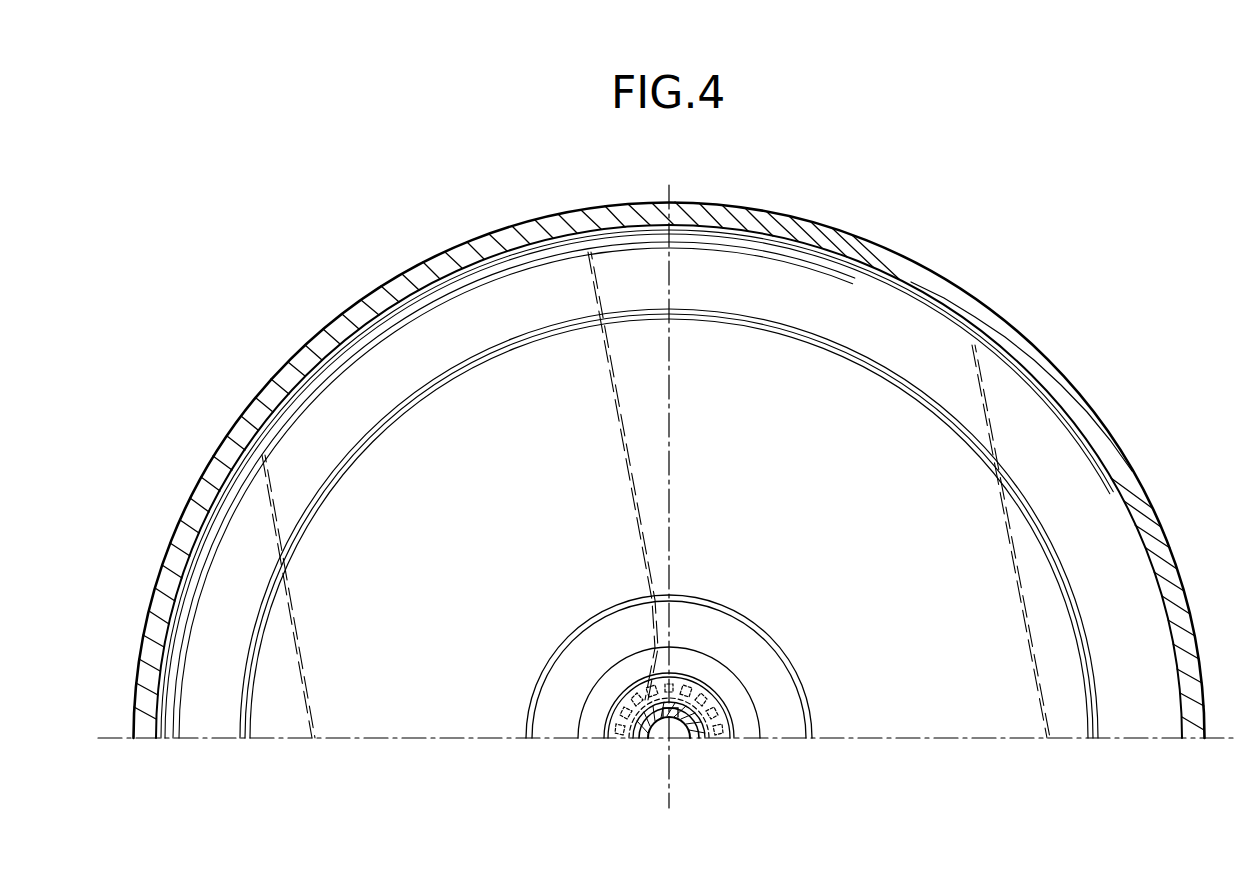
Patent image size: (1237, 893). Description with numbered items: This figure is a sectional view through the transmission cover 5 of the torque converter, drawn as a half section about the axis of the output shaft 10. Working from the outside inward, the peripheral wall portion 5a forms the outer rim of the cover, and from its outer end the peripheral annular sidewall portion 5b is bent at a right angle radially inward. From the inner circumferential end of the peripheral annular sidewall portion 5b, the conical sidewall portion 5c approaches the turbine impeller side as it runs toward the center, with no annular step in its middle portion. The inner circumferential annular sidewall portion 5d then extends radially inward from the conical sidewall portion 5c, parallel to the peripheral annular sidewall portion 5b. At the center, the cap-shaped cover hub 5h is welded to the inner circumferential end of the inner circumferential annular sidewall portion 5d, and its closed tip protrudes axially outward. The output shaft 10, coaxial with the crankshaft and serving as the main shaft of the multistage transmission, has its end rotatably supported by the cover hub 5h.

The transmission cover 5 is at (1035, 360).
The peripheral wall portion 5a is at (918, 275).
The peripheral annular sidewall portion 5b is at (1130, 720).
The conical sidewall portion 5c is at (915, 718).
The inner circumferential annular sidewall portion 5d is at (781, 726).
The cover hub 5h is at (707, 740).
The output shaft 10 is at (644, 740).